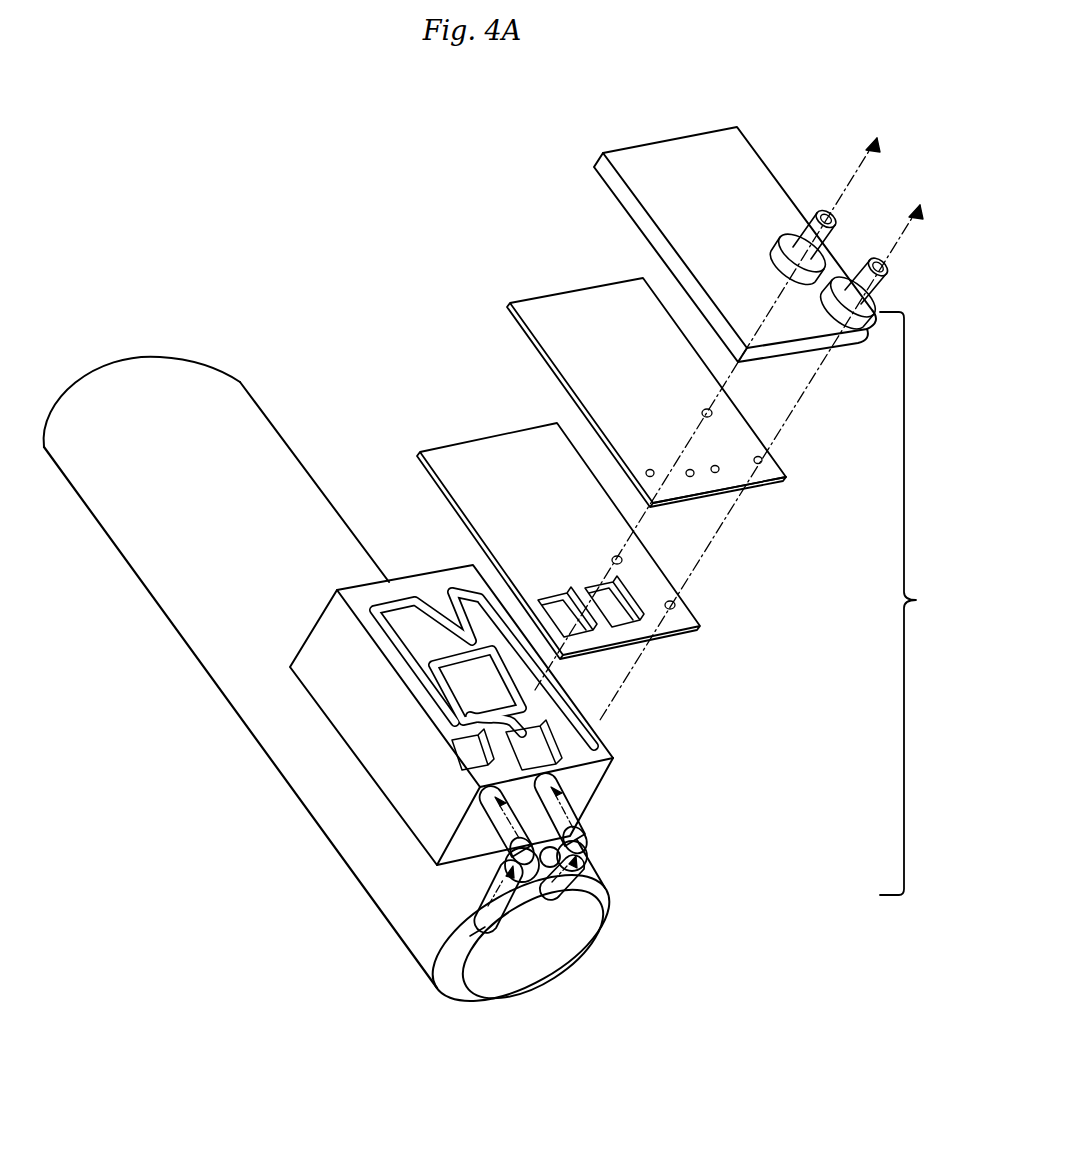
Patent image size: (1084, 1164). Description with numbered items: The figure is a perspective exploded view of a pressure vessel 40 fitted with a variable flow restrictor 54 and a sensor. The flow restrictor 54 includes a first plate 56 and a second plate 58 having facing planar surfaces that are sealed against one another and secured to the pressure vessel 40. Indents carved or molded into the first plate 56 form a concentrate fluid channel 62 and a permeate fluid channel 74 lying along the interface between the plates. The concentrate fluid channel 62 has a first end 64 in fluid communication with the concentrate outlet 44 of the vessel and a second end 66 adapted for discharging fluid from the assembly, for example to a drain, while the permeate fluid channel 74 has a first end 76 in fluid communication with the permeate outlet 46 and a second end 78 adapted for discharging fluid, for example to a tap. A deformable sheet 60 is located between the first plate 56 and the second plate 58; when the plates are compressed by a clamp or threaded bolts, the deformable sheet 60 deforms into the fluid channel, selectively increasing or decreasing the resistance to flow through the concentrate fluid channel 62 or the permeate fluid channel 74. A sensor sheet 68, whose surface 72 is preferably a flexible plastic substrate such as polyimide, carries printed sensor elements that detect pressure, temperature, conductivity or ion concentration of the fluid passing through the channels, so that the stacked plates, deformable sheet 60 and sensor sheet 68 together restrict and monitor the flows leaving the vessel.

The pressure vessel 40 is at (166, 390).
The concentrate outlet 44 is at (480, 900).
The permeate outlet 46 is at (577, 887).
The flow restrictor 54 is at (921, 603).
The first plate 56 is at (380, 753).
The second plate 58 is at (623, 203).
The deformable sheet 60 is at (510, 453).
The concentrate fluid channel 62 is at (388, 633).
The first end of concentrate fluid channel 64 is at (488, 807).
The second end of concentrate fluid channel 66 is at (873, 257).
The sensor sheet 68 is at (773, 490).
The surface of sensor sheet 72 is at (537, 312).
The permeate fluid channel 74 is at (460, 692).
The first end of permeate fluid channel 76 is at (545, 790).
The second end of permeate fluid channel 78 is at (812, 215).